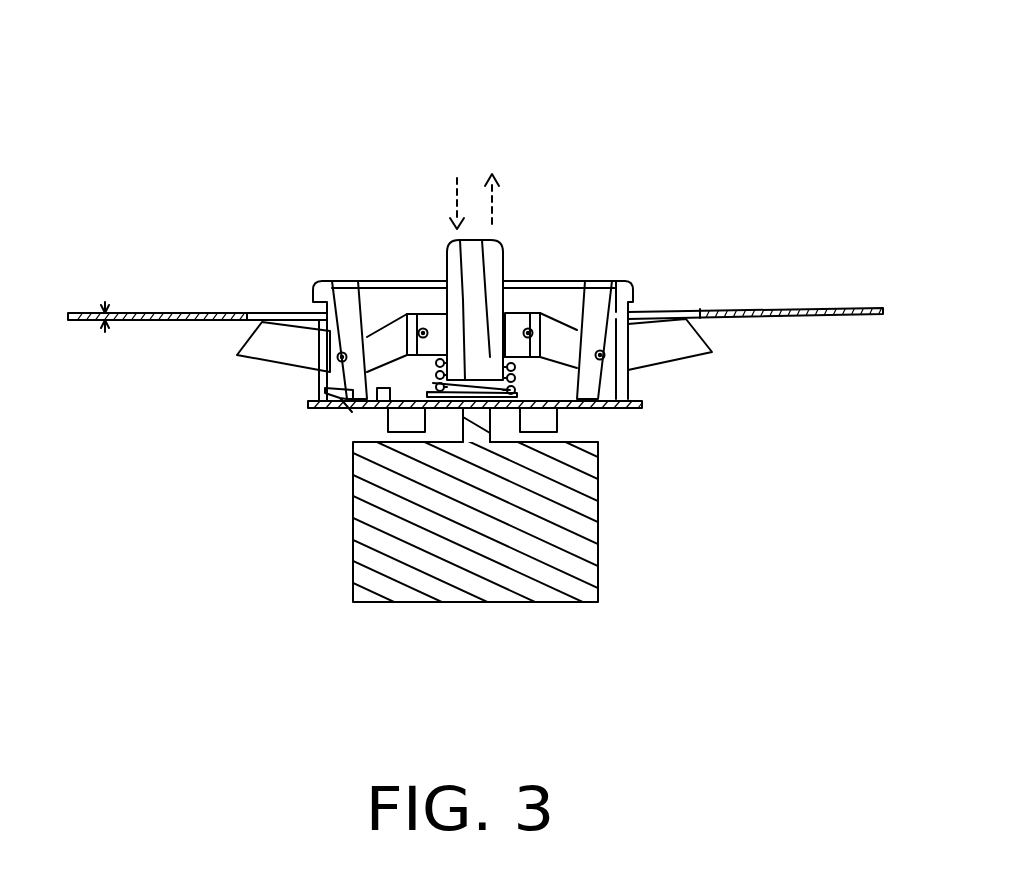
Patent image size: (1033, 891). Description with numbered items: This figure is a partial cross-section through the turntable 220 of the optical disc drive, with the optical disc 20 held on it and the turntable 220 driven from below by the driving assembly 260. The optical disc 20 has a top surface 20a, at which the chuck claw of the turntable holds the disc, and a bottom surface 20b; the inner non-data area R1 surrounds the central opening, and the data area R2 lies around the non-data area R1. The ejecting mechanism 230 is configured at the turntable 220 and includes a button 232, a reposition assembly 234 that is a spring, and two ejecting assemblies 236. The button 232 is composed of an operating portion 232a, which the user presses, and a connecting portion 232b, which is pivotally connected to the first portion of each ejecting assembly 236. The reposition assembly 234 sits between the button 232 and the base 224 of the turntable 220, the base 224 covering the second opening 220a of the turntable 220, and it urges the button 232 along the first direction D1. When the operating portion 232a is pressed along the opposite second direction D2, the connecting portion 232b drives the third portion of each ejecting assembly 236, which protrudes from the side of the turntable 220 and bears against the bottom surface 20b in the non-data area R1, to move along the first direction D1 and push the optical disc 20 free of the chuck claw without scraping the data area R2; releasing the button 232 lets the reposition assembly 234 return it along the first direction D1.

The optical disc 20 is at (858, 311).
The top surface 20a is at (104, 302).
The bottom surface 20b is at (104, 332).
The non-data area R1 is at (267, 312).
The data area R2 is at (193, 312).
The turntable 220 is at (347, 292).
The second opening 220a is at (352, 412).
The base 224 is at (633, 408).
The ejecting mechanism 230 is at (583, 53).
The button 232 is at (533, 223).
The operating portion 232a is at (503, 267).
The connecting portion 232b is at (483, 357).
The reposition assembly 234 is at (545, 378).
The ejecting assembly 236 is at (670, 340).
The driving assembly 260 is at (593, 532).
The first direction D1 is at (492, 175).
The second direction D2 is at (456, 177).